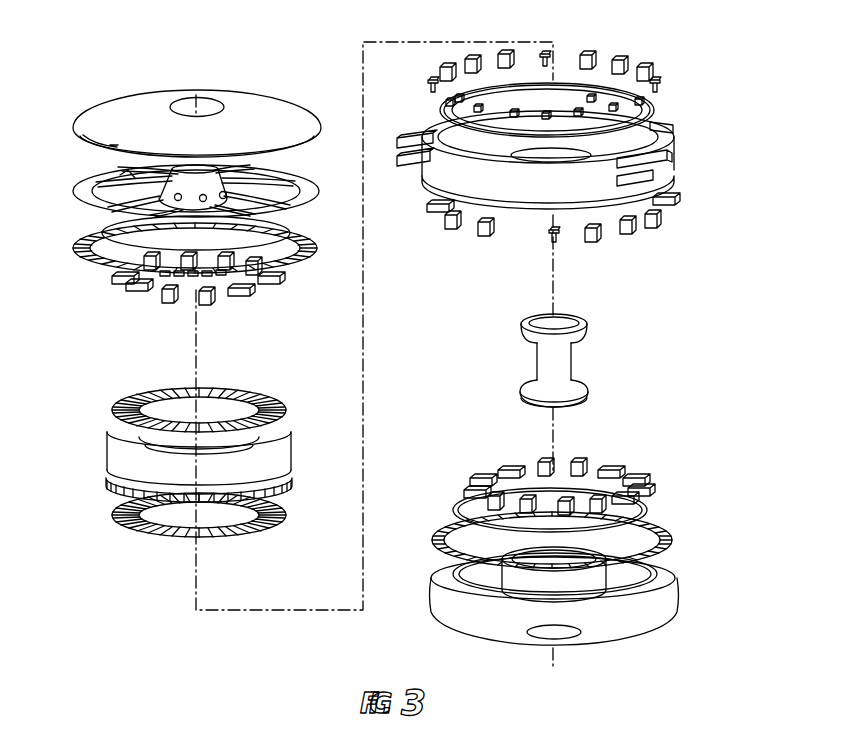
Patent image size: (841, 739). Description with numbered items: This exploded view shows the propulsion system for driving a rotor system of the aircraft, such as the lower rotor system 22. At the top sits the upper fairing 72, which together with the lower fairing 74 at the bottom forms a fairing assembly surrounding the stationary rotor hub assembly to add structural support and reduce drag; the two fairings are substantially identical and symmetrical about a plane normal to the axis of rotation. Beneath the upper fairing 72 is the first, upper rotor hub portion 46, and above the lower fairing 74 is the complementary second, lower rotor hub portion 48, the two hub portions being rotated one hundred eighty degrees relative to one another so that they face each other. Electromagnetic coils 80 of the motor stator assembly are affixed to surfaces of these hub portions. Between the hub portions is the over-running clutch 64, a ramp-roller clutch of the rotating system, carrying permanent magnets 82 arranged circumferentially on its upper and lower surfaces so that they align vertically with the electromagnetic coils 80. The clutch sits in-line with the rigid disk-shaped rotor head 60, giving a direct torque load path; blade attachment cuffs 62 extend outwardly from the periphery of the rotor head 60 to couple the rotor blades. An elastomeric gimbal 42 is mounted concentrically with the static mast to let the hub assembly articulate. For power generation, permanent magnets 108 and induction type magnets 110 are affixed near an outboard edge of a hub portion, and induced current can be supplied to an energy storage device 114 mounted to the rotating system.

The lower rotor system 22 is at (100, 73).
The upper fairing 72 is at (258, 106).
The first, upper rotor hub portion 46 is at (108, 182).
The electromagnetic coils 80 is at (130, 276).
The permanent magnets 82 is at (145, 393).
The over-running clutch 64 is at (104, 446).
The rotor head 60 is at (564, 168).
The blade attachment cuff 62 is at (660, 175).
The permanent magnets 108 is at (633, 228).
The elastomeric gimbal 42 is at (567, 368).
The induction type magnets 110 is at (678, 538).
The energy storage device 114 is at (667, 550).
The second, lower rotor hub portion 48 is at (572, 596).
The lower fairing 74 is at (467, 622).